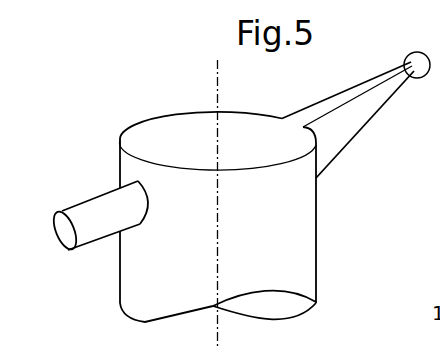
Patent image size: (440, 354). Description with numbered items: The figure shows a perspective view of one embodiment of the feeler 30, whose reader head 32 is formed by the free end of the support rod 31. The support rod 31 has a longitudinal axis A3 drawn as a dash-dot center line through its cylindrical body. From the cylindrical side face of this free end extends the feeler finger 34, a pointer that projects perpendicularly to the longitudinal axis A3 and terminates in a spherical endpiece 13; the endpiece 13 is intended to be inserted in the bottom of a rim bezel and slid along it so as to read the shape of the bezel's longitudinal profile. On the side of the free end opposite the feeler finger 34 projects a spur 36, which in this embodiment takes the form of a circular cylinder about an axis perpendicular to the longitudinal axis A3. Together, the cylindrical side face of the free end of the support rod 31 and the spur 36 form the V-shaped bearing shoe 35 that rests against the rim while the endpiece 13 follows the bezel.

The feeler 30 is at (133, 108).
The support rod 31 is at (318, 265).
The reader head 32 is at (318, 199).
The feeler finger 34 is at (347, 97).
The V-shaped bearing shoe 35 is at (120, 170).
The spur 36 is at (84, 232).
The spherical endpiece 13 is at (414, 52).
The longitudinal axis A3 is at (219, 81).